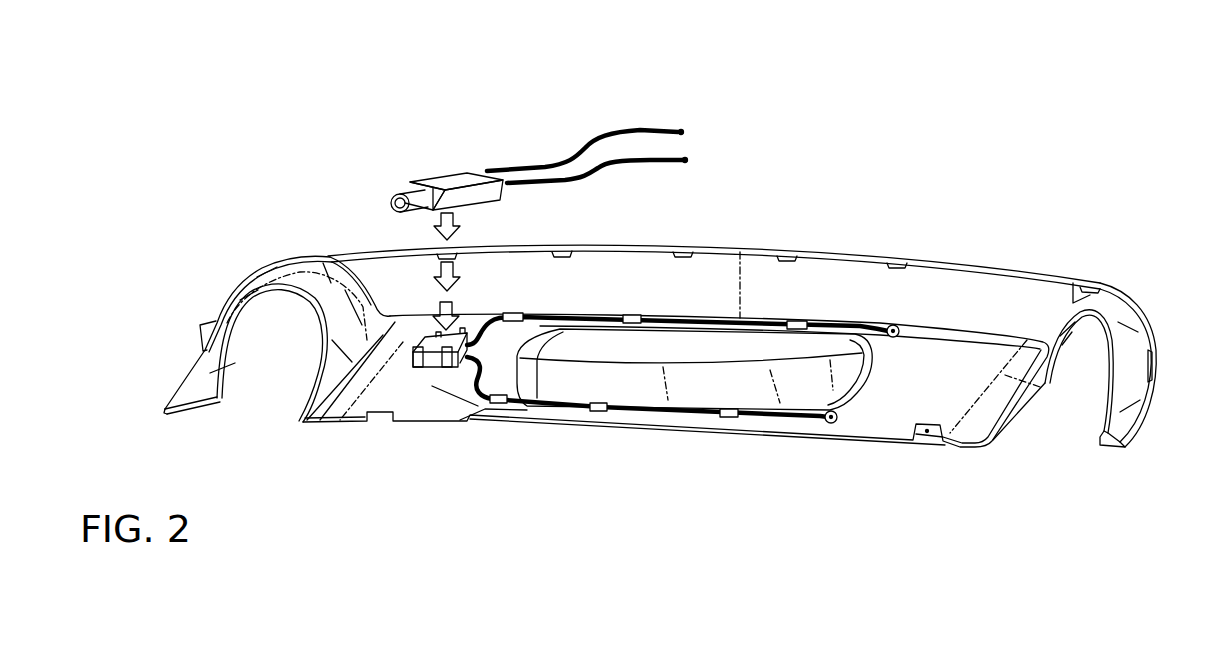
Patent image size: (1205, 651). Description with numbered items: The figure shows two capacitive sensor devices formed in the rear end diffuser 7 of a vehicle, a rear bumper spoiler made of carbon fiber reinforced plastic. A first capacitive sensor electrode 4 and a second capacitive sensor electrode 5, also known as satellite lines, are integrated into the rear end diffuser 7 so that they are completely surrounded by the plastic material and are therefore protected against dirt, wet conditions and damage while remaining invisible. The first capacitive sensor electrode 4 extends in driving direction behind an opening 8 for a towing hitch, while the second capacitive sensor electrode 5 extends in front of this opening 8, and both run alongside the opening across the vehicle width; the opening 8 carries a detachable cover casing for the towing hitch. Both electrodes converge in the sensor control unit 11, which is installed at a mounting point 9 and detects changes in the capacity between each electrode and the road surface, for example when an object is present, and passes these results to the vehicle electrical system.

The first capacitive sensor electrode 4 is at (664, 130).
The second capacitive sensor electrode 5 is at (665, 162).
The rear end diffuser 7 is at (858, 287).
The opening for towing hitch 8 is at (742, 350).
The mounting point 9 is at (442, 385).
The sensor control unit 11 is at (410, 188).